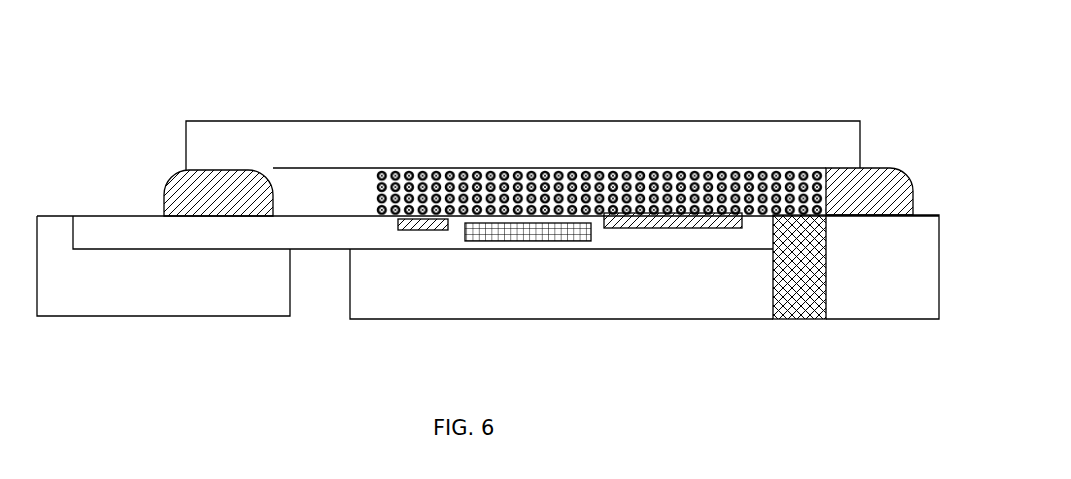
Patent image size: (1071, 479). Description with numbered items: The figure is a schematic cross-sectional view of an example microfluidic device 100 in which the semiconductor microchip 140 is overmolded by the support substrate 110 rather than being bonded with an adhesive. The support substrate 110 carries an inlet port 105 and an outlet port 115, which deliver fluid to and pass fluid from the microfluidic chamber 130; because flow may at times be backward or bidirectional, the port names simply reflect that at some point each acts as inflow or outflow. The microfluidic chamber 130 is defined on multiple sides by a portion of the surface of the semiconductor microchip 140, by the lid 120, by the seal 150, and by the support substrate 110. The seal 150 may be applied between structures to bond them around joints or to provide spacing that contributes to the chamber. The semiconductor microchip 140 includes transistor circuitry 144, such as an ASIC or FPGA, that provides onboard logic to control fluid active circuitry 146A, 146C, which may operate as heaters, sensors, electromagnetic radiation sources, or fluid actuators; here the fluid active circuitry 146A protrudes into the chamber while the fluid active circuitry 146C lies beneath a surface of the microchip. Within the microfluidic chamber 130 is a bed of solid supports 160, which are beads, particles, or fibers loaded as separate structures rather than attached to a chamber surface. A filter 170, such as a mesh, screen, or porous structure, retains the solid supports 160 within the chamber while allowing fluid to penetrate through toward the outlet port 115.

The microfluidic device 100 is at (152, 45).
The inlet port 105 is at (313, 338).
The support substrate 110 is at (185, 295).
The outlet port 115 is at (794, 341).
The lid 120 is at (338, 143).
The microfluidic chamber 130 is at (333, 200).
The semiconductor microchip 140 is at (115, 232).
The transistor circuitry 144 is at (522, 233).
The fluid active circuitry 146A is at (706, 173).
The fluid active circuitry 146C is at (423, 218).
The seal 150 is at (215, 185).
The solid supports 160 is at (625, 172).
The filter 170 is at (806, 271).